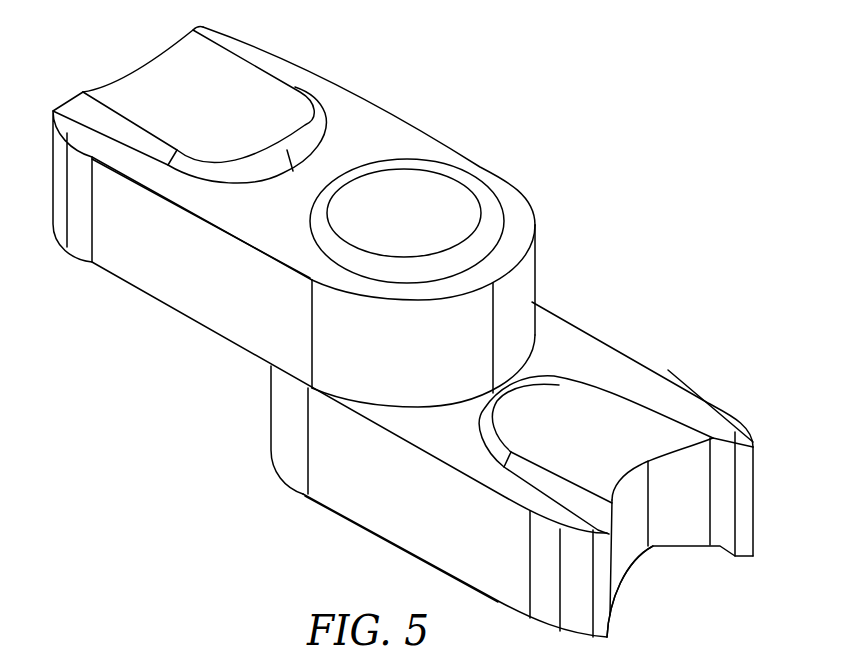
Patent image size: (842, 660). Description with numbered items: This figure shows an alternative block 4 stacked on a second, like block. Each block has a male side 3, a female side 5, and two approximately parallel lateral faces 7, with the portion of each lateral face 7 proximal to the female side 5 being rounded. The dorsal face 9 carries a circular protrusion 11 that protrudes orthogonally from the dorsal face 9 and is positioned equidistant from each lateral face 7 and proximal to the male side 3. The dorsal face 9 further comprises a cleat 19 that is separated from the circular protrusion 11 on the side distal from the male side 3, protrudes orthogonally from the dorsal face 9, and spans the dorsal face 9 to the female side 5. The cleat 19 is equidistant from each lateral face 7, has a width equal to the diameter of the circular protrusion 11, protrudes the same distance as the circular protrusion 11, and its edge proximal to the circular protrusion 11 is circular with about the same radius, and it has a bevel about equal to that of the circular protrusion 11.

The male side 3 is at (497, 320).
The alternative block 4 is at (108, 286).
The female side 5 is at (130, 82).
The lateral faces 7 is at (193, 295).
The dorsal face 9 is at (343, 157).
The circular protrusion 11 is at (437, 200).
The cleat 19 is at (251, 106).